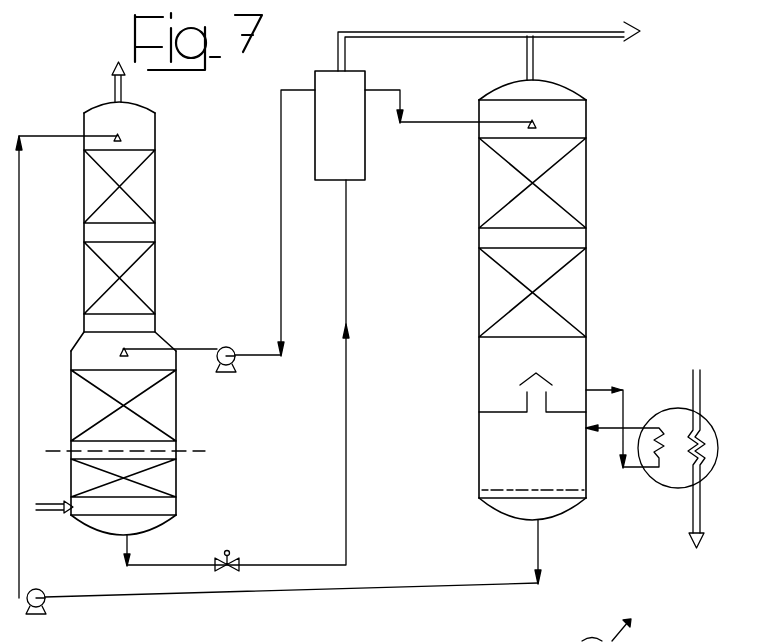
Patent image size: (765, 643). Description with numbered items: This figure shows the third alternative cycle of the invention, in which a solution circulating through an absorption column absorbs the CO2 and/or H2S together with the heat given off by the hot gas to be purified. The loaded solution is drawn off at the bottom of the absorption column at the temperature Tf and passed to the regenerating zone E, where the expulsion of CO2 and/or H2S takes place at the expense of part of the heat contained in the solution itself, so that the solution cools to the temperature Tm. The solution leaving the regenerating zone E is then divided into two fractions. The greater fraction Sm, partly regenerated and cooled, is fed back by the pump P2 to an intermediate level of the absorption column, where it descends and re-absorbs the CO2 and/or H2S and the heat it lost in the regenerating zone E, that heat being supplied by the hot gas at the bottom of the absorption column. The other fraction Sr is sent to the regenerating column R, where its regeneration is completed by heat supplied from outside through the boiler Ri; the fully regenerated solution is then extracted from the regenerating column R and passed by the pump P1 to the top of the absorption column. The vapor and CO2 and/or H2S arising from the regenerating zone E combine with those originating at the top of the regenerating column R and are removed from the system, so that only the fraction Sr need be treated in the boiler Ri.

The regenerating zone E is at (477, 101).
The regenerating column R is at (549, 310).
The pump P1 is at (44, 609).
The pump P2 is at (228, 374).
The greater fraction of the solution Sm is at (275, 223).
The other fraction of the solution Sr is at (450, 109).
The temperature of the cooled solution Tm is at (168, 338).
The temperature of the solution drawn off the absorption column Tf is at (236, 375).
The boiler Ri is at (652, 459).